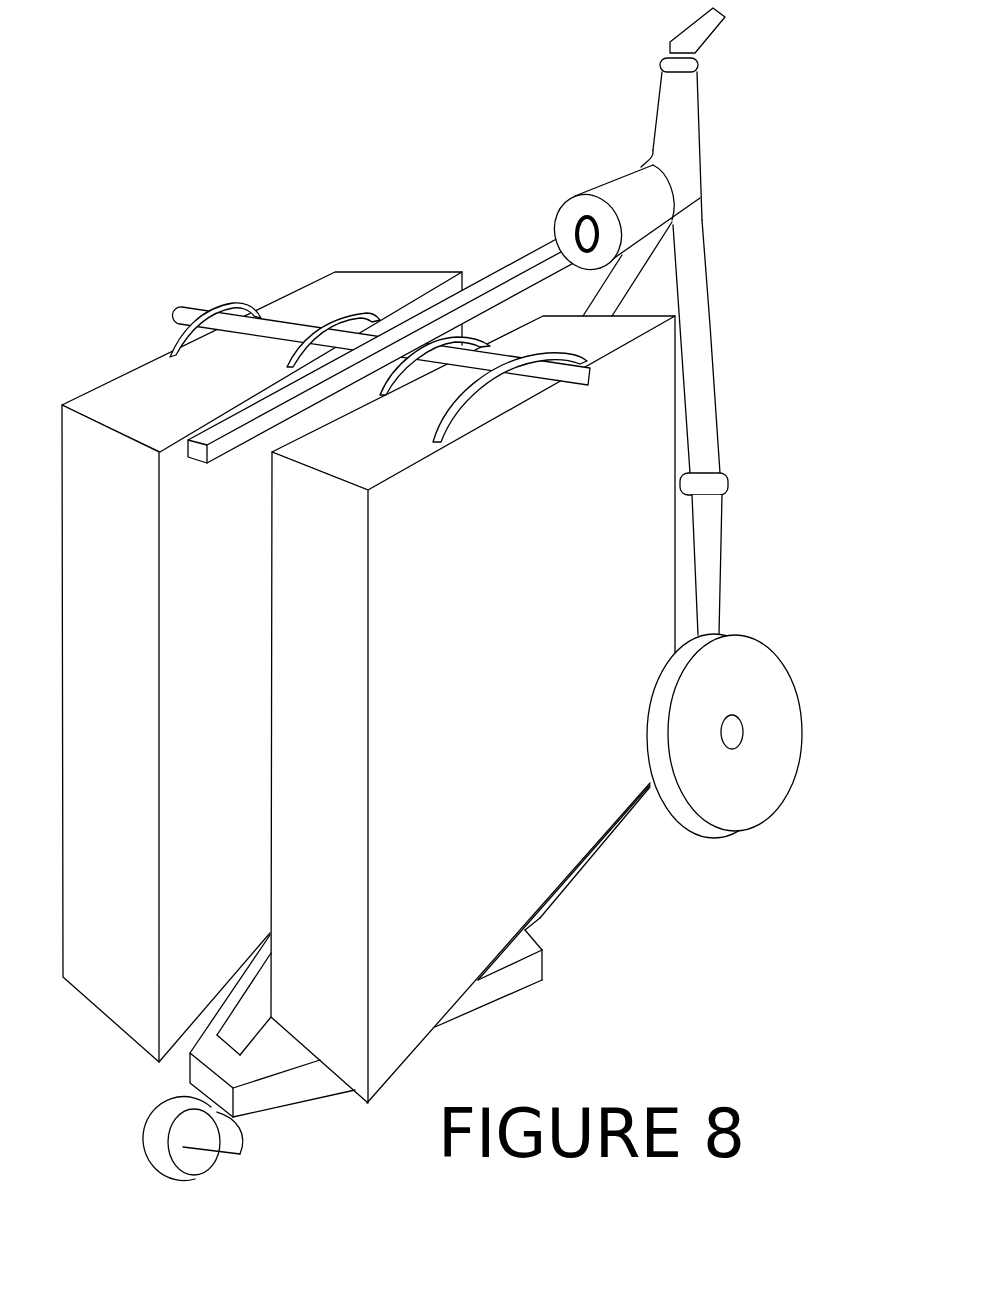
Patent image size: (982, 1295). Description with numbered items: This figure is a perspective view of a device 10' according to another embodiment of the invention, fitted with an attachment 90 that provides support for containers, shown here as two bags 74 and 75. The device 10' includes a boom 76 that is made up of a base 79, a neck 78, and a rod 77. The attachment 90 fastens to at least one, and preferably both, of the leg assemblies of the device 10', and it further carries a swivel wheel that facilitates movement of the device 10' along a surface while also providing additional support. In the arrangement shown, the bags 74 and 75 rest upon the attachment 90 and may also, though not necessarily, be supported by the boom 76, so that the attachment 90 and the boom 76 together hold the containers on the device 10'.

The device 10' is at (466, 594).
The bag 74 is at (100, 1012).
The bag 75 is at (345, 1093).
The boom 76 is at (530, 250).
The rod 77 is at (180, 312).
The neck 78 is at (701, 132).
The base 79 is at (713, 282).
The attachment 90 is at (575, 927).